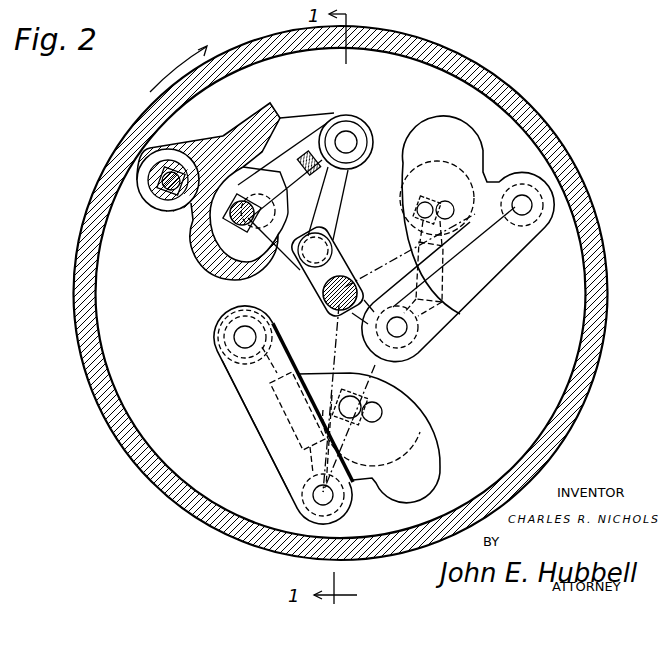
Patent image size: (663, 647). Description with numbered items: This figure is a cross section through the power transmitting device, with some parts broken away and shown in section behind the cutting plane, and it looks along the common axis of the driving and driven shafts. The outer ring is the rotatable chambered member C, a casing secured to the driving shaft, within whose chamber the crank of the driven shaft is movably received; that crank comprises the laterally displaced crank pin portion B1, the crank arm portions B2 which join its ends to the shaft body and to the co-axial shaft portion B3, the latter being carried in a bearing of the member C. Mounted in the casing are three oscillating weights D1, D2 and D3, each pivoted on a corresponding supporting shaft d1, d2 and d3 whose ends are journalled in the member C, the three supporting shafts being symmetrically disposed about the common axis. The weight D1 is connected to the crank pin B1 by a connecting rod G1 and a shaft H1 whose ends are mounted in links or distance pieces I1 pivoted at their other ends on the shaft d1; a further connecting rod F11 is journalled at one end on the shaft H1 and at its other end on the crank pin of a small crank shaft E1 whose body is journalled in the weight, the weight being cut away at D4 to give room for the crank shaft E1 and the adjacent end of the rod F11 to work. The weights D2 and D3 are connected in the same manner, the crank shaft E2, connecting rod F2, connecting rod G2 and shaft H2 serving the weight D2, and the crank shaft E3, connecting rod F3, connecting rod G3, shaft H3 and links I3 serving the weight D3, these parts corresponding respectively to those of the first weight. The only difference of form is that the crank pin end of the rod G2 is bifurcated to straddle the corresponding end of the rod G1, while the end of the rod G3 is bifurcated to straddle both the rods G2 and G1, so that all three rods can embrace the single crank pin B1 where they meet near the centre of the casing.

The rotatable chambered member C is at (462, 54).
The oscillating weight D1 is at (197, 263).
The cut-away portion of weight D4 is at (240, 158).
The weight supporting shaft d1 is at (330, 200).
The link or distance piece I1 is at (299, 118).
The connecting rod F11 is at (325, 120).
The shaft H1 is at (348, 139).
The connecting rod G1 is at (350, 188).
The crank shaft E1 is at (270, 212).
The crank arm portions B2 is at (330, 312).
The connecting rod G2 is at (339, 250).
The crank pin portion B1 is at (270, 297).
The shaft portion B3 is at (335, 335).
The oscillating weight D2 is at (473, 148).
The weight supporting shaft d2 is at (387, 233).
The shaft H2 is at (400, 332).
The crank shaft E2 is at (421, 201).
The connecting rod F2 is at (470, 319).
The oscillating weight D3 is at (444, 447).
The weight supporting shaft d3 is at (323, 496).
The shaft H3 is at (242, 339).
The connecting rod G3 is at (225, 337).
The crank shaft E3 is at (363, 426).
The connecting rod F3 is at (300, 368).
The link or distance piece I3 is at (253, 420).